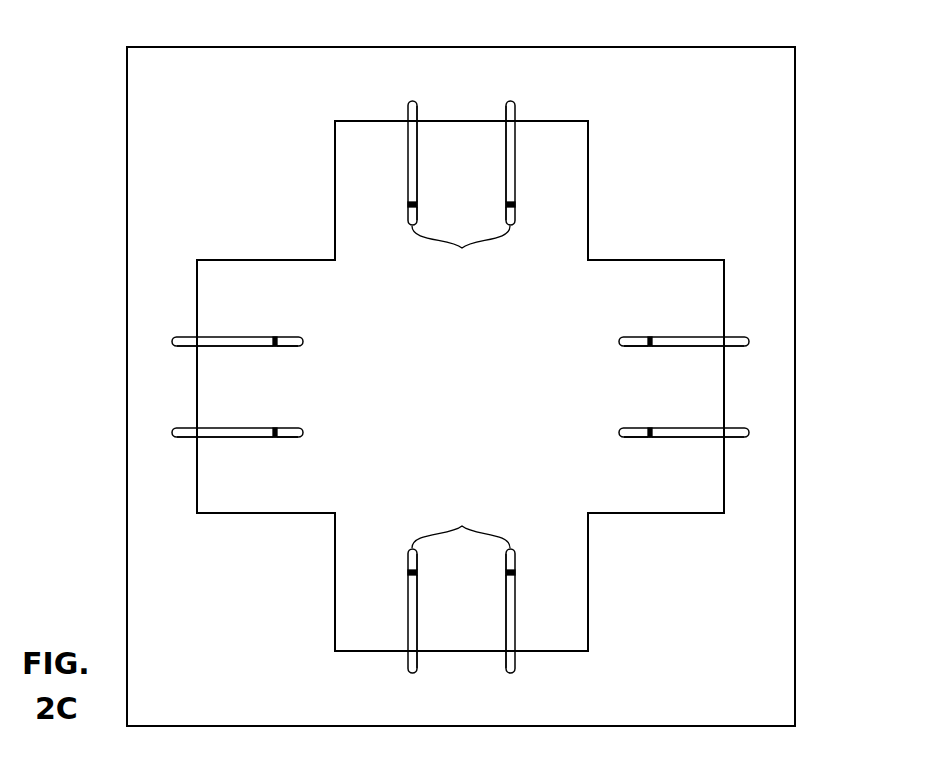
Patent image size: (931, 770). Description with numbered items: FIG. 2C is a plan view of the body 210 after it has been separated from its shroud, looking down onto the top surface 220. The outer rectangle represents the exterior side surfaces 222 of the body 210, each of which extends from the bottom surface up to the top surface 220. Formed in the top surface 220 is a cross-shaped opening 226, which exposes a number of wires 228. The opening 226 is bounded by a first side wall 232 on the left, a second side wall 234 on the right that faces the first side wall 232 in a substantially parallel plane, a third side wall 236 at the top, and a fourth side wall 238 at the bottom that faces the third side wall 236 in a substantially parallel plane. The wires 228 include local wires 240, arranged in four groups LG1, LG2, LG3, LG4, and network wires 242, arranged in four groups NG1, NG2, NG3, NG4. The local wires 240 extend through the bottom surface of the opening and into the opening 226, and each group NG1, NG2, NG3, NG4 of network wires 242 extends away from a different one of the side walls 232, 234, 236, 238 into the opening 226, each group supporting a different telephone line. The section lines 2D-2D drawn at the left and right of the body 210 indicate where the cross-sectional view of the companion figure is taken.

The body 210 is at (126, 83).
The top surface 220 is at (140, 559).
The exterior side surfaces 222 is at (245, 46).
The opening 226 is at (477, 400).
The wires 228 is at (419, 105).
The first side wall 232 is at (199, 483).
The second side wall 234 is at (722, 483).
The third side wall 236 is at (372, 123).
The fourth side wall 238 is at (363, 650).
The local wires 240 is at (619, 427).
The network wires 242 is at (418, 173).
The first group of network wires NG1 is at (242, 334).
The second group of network wires NG2 is at (418, 139).
The third group of network wires NG3 is at (657, 334).
The fourth group of network wires NG4 is at (418, 637).
The first group of local wires LG1 is at (306, 341).
The second group of local wires LG2 is at (418, 215).
The third group of local wires LG3 is at (616, 341).
The fourth group of local wires LG4 is at (418, 562).
The section lines 2D- 2D is at (122, 431).